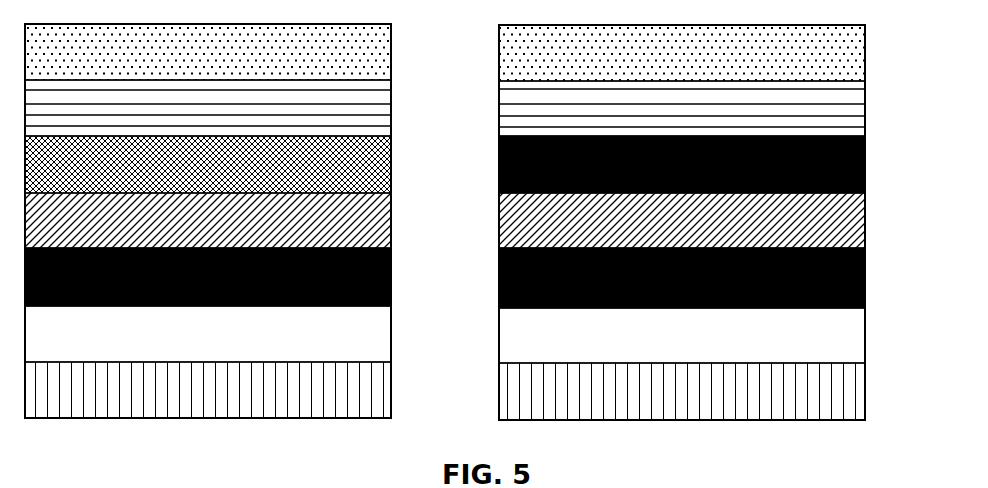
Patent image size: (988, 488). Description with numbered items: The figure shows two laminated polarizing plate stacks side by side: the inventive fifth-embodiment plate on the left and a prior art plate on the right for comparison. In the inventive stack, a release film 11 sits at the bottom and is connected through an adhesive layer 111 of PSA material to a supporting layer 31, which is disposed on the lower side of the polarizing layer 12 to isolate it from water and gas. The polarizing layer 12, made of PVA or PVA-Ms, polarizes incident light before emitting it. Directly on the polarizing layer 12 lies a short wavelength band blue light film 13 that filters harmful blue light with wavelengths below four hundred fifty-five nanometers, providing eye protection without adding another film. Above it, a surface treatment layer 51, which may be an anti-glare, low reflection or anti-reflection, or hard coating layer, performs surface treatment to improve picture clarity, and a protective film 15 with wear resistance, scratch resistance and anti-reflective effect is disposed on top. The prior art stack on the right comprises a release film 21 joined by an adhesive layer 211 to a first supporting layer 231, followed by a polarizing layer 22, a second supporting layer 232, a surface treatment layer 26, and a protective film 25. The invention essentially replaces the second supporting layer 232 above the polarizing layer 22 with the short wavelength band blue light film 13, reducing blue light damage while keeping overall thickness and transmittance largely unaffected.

The protective film 15 is at (392, 55).
The surface treatment layer 51 is at (392, 111).
The short wavelength band blue light film 13 is at (392, 168).
The polarizing layer 12 is at (392, 223).
The supporting layer 31 is at (392, 279).
The adhesive layer 111 is at (392, 336).
The release film 11 is at (392, 393).
The protective film 25 is at (866, 56).
The surface treatment layer 26 is at (866, 111).
The second supporting layer 232 is at (866, 170).
The polarizing layer 22 is at (866, 223).
The first supporting layer 231 is at (866, 280).
The adhesive layer 211 is at (866, 338).
The release film 21 is at (866, 395).